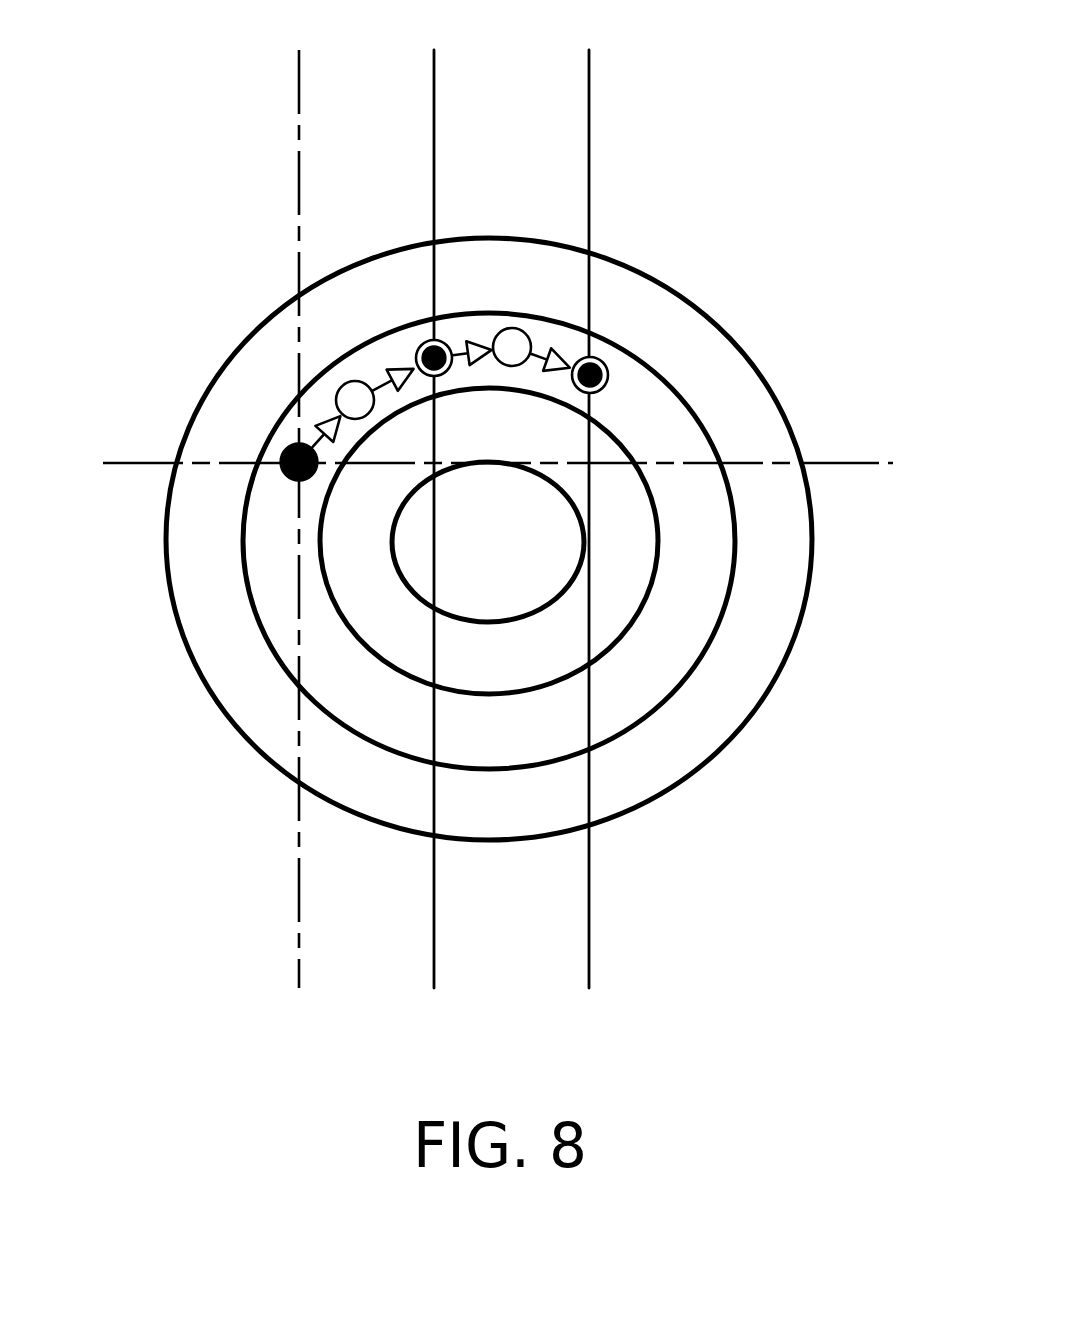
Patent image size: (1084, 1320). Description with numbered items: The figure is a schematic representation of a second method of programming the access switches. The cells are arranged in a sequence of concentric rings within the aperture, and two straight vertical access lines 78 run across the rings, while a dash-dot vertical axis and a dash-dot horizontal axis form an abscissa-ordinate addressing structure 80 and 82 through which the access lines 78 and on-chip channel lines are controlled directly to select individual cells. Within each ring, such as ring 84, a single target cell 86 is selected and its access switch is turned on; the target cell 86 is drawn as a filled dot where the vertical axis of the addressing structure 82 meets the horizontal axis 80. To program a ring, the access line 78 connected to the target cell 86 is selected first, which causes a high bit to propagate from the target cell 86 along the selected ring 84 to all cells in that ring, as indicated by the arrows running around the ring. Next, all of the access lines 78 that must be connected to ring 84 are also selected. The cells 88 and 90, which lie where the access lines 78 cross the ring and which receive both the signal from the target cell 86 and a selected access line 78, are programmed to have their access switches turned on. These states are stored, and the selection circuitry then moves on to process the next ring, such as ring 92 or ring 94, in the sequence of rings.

The access lines 78 is at (434, 915).
The abscissa-ordinate addressing structure 80 is at (130, 460).
The abscissa-ordinate addressing structure 82 is at (299, 86).
The ring 84 is at (284, 615).
The target cell 86 is at (290, 470).
The cell 88 is at (420, 350).
The cell 90 is at (600, 358).
The ring 92 is at (618, 573).
The ring 94 is at (773, 555).